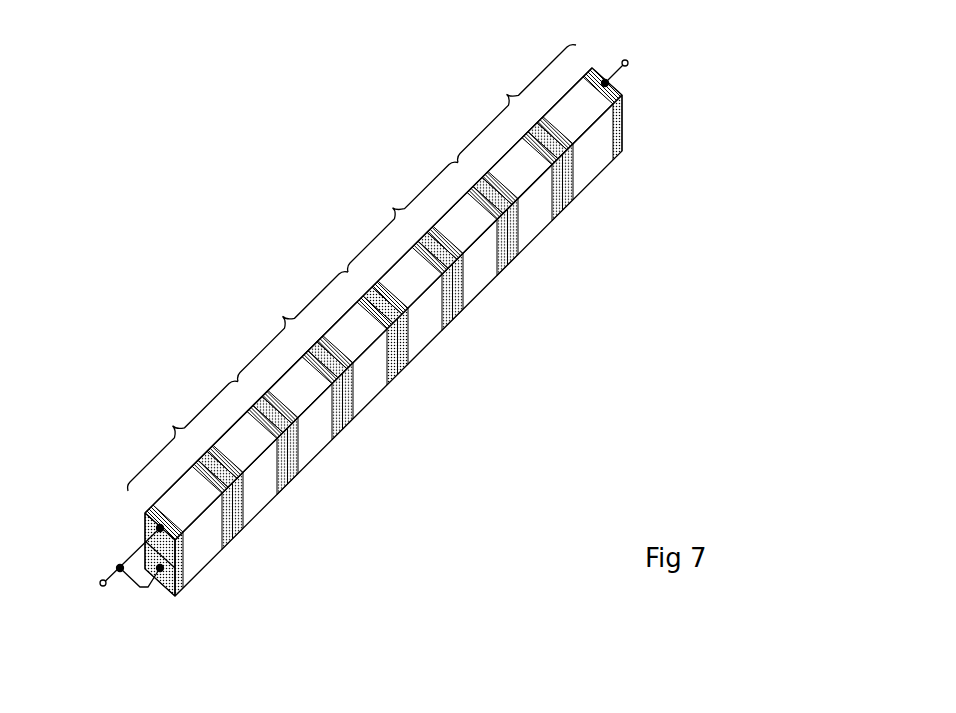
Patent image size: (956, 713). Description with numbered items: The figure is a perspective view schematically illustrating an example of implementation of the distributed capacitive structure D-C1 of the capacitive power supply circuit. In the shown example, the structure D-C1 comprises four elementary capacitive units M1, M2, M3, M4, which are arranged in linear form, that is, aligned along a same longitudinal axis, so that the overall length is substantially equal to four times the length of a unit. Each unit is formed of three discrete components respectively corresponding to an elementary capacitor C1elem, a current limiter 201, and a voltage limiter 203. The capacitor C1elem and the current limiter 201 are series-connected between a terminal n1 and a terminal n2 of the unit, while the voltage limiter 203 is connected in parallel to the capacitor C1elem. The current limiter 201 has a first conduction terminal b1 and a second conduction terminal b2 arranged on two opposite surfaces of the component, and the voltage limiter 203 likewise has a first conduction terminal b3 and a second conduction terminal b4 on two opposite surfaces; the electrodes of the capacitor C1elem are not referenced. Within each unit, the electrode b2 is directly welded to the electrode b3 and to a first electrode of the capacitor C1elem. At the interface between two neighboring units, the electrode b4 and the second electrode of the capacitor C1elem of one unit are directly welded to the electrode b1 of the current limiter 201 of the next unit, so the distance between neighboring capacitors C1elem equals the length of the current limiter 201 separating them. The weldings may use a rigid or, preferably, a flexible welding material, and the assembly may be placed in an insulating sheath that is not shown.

The terminal n1 is at (625, 60).
The terminal n2 is at (100, 583).
The elementary capacitive unit M1 is at (517, 104).
The elementary capacitive unit M2 is at (403, 217).
The elementary capacitive unit M3 is at (293, 327).
The elementary capacitive unit M4 is at (183, 436).
The elementary capacitor C1elem is at (383, 304).
The distributed capacitive structure D-C1 is at (296, 192).
The first conduction terminal b1 is at (500, 270).
The second conduction terminal b2 is at (568, 203).
The first conduction terminal b3 is at (561, 210).
The second conduction terminal b4 is at (510, 261).
The current limiter 201 is at (595, 170).
The voltage limiter 203 is at (530, 235).